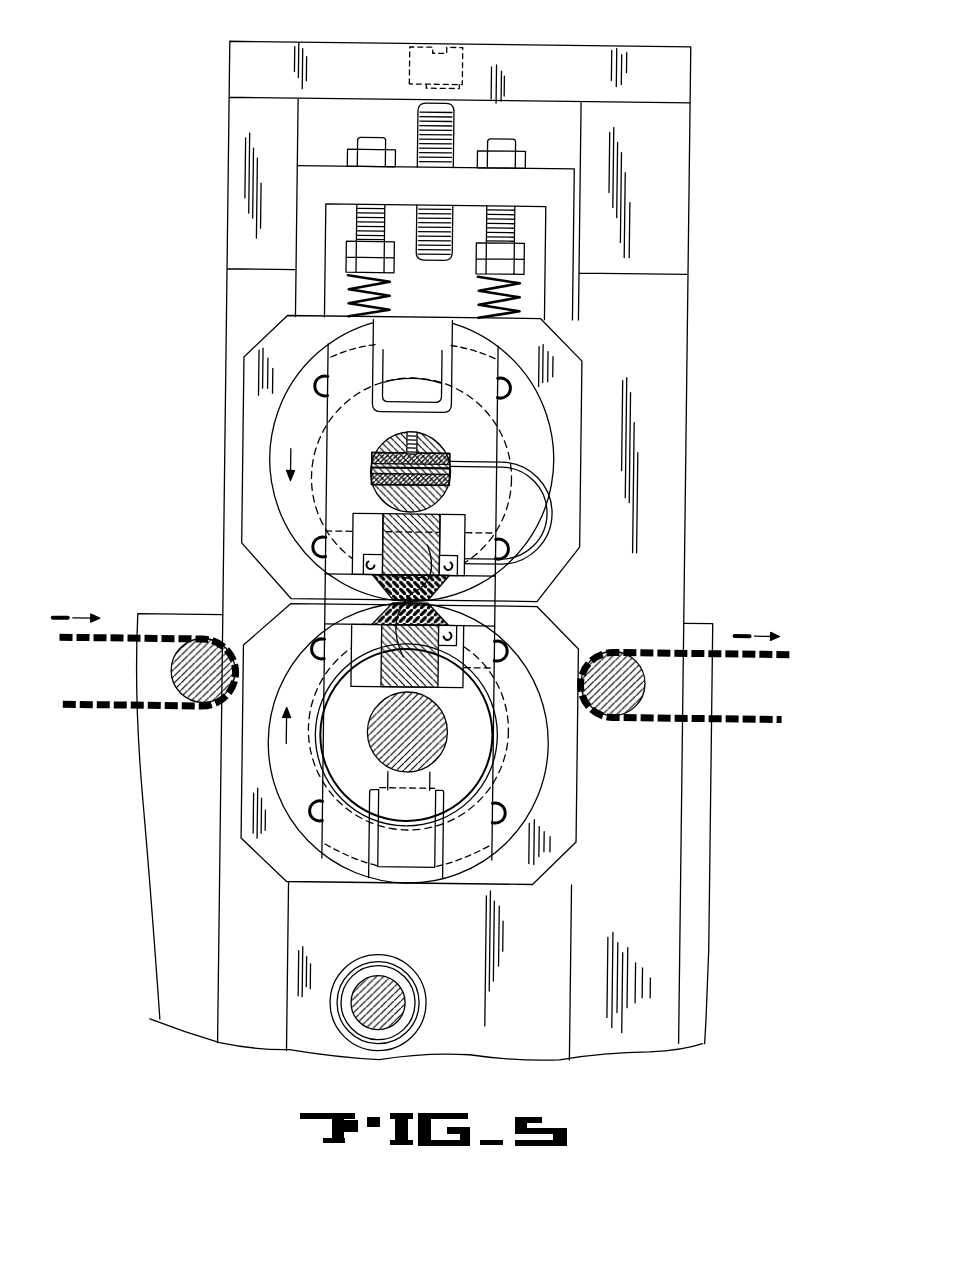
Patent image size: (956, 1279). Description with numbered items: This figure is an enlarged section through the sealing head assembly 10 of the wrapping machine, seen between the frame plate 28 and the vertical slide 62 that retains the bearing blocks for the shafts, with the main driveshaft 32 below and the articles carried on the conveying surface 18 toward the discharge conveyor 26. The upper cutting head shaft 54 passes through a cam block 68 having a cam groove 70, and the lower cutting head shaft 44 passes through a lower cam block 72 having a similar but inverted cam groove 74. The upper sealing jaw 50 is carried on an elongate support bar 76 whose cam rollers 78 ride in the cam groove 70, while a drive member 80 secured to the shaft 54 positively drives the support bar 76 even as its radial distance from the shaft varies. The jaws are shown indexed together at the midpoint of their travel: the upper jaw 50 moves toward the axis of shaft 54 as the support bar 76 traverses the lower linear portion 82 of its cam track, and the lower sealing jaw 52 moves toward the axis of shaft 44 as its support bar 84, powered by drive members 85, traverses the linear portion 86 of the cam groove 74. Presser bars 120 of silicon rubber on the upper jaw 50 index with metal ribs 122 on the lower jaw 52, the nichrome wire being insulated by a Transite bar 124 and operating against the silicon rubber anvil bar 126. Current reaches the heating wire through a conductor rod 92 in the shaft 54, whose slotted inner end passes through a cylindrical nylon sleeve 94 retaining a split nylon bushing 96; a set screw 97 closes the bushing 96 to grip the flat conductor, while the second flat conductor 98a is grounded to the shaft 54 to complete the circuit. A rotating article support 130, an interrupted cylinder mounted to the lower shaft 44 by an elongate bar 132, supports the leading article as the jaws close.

The sealing head assembly 10 is at (150, 267).
The conveying surface 18 is at (128, 636).
The discharge conveyor 26 is at (785, 650).
The frame plate 28 is at (170, 907).
The main driveshaft 32 is at (380, 992).
The lower cutting head shaft 44 is at (372, 742).
The upper sealing jaw 50 is at (452, 582).
The lower sealing jaw 52 is at (452, 614).
The upper cutting head shaft 54 is at (428, 440).
The vertical slide 62 is at (686, 209).
The cam block 68 is at (568, 431).
The cam groove 70 is at (532, 418).
The lower cam block 72 is at (566, 749).
The lower cam groove 74 is at (536, 767).
The support bar 76 is at (385, 520).
The cam roller 78 is at (455, 518).
The drive member 80 is at (342, 478).
The lower linear portion of cam track 82 is at (372, 578).
The lower support bar 84 is at (355, 668).
The lower drive member 85 is at (470, 728).
The linear portion of cam track 86 is at (365, 628).
The conductor rod 92 is at (397, 458).
The cylindrical nylon sleeve 94 is at (452, 458).
The split nylon bushing 96 is at (452, 467).
The set screw 97 is at (409, 431).
The second flat conductor 98a is at (555, 560).
The presser bar 120 is at (375, 586).
The metal rib 122 is at (375, 612).
The Transite bar 124 is at (457, 566).
The silicon rubber anvil bar 126 is at (408, 615).
The rotating article support 130 is at (495, 758).
The elongate bar 132 is at (411, 822).